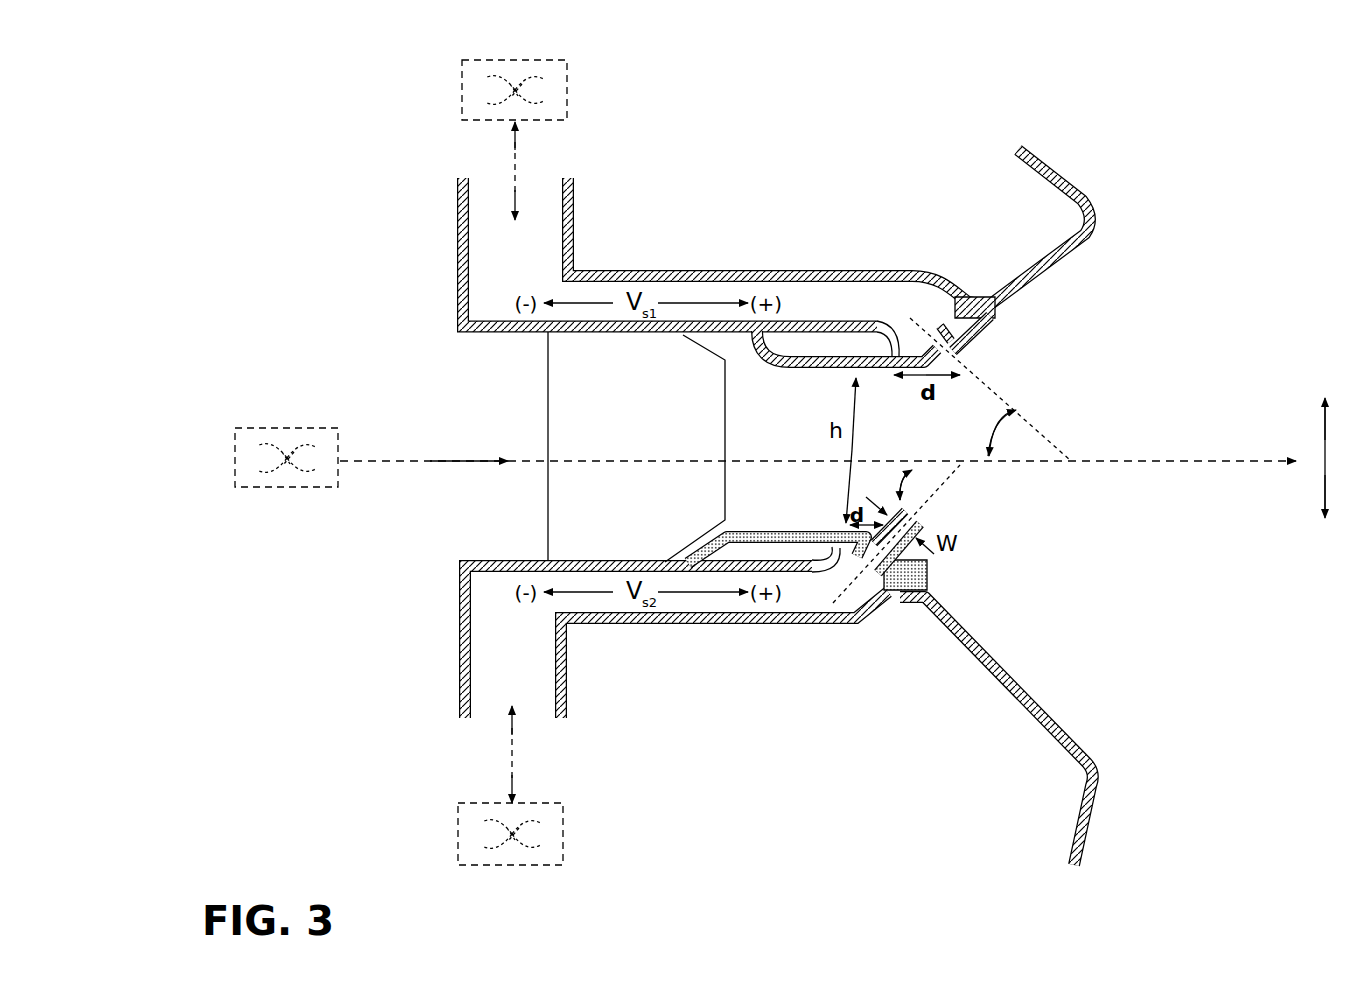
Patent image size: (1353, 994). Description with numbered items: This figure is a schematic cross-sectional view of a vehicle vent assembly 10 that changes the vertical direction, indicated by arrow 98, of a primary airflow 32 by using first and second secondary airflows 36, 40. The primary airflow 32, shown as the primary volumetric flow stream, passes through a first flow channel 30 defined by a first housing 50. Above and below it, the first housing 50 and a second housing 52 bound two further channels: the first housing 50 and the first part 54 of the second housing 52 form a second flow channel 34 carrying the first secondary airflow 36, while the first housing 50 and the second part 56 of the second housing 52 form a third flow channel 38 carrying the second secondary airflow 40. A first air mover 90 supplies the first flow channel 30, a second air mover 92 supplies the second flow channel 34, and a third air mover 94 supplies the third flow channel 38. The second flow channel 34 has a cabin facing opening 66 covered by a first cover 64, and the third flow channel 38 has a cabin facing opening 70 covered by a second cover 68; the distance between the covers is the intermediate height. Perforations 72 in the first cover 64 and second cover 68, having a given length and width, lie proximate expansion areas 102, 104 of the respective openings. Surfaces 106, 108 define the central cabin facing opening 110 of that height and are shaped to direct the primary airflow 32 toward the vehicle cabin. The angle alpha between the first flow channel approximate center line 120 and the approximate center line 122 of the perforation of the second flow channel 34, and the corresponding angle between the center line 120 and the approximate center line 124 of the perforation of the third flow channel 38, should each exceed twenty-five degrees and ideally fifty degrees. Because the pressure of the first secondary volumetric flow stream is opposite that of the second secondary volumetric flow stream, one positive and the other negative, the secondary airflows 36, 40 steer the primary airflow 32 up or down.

The vehicle vent assembly 10 is at (356, 152).
The first flow channel 30 is at (522, 518).
The primary airflow 32 is at (426, 458).
The second flow channel 34 is at (684, 290).
The first secondary airflow 36 is at (518, 174).
The third flow channel 38 is at (587, 600).
The second secondary airflow 40 is at (507, 756).
The first housing 50 is at (456, 270).
The second housing 52 is at (783, 272).
The first part 54 is at (1085, 255).
The second part 56 is at (1085, 750).
The first cover 64 is at (977, 341).
The cabin facing opening 66 is at (907, 346).
The second cover 68 is at (742, 536).
The cabin facing opening 70 is at (816, 585).
The perforations 72 is at (960, 354).
The first air mover 90 is at (280, 421).
The second air mover 92 is at (540, 62).
The third air mover 94 is at (565, 832).
The arrow 98 is at (1323, 476).
The expansion area 102 is at (937, 313).
The expansion area 104 is at (846, 566).
The surface 106 is at (803, 362).
The surface 108 is at (786, 528).
The cabin facing opening 110 is at (777, 446).
The first flow channel approximate center line 120 is at (536, 458).
The approximate center line 122 is at (1030, 426).
The approximate center line 124 is at (927, 502).